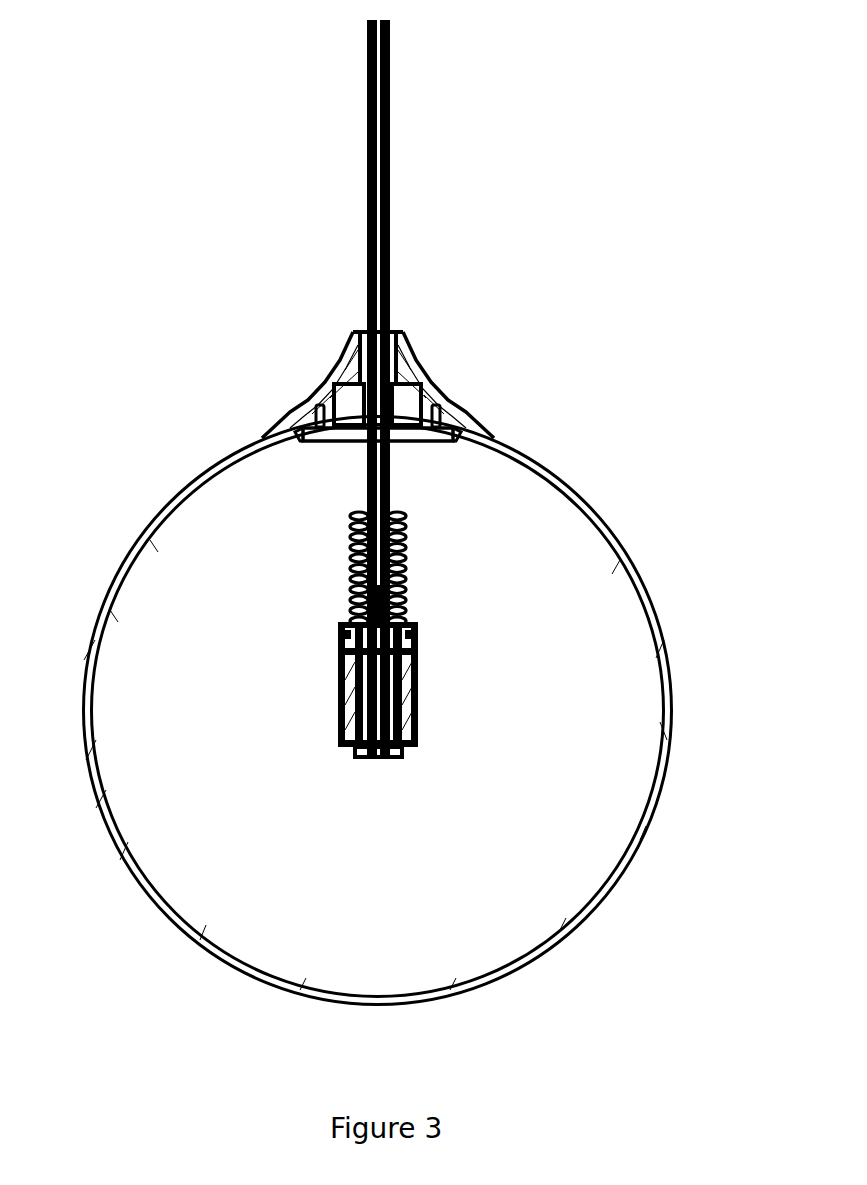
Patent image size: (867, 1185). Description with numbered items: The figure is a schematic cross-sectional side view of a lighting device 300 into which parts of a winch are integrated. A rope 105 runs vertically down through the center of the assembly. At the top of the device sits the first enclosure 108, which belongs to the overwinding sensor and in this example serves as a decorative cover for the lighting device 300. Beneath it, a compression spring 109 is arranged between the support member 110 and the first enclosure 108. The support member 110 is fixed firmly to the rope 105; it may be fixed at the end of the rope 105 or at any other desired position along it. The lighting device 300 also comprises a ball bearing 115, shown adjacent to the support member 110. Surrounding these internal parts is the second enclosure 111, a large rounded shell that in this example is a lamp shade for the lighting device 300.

The rope 105 is at (398, 190).
The first enclosure 108 is at (446, 384).
The spring 109 is at (406, 577).
The support member 110 is at (334, 696).
The second enclosure 111 is at (622, 539).
The ball bearing 115 is at (334, 626).
The lighting device 300 is at (124, 989).